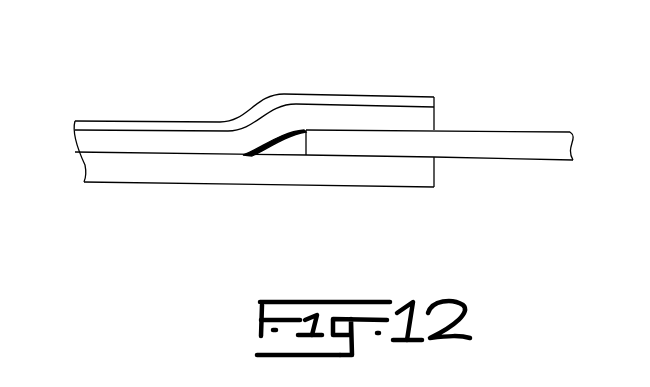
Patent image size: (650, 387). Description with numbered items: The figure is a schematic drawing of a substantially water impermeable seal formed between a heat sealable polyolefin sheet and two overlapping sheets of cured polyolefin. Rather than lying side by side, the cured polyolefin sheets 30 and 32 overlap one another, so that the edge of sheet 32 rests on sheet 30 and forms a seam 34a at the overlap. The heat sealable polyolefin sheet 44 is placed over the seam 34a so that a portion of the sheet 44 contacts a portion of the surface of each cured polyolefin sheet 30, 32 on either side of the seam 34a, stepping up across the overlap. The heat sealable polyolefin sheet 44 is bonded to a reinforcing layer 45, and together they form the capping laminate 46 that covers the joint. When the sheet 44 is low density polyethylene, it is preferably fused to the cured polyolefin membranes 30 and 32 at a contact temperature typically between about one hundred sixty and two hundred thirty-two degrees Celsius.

The cured polyolefin sheet 30 is at (155, 172).
The cured polyolefin sheet 32 is at (523, 151).
The seam 34a is at (306, 143).
The heat sealable polyolefin sheet 44 is at (438, 115).
The reinforcing layer 45 is at (437, 98).
The capping laminate 46 is at (62, 125).